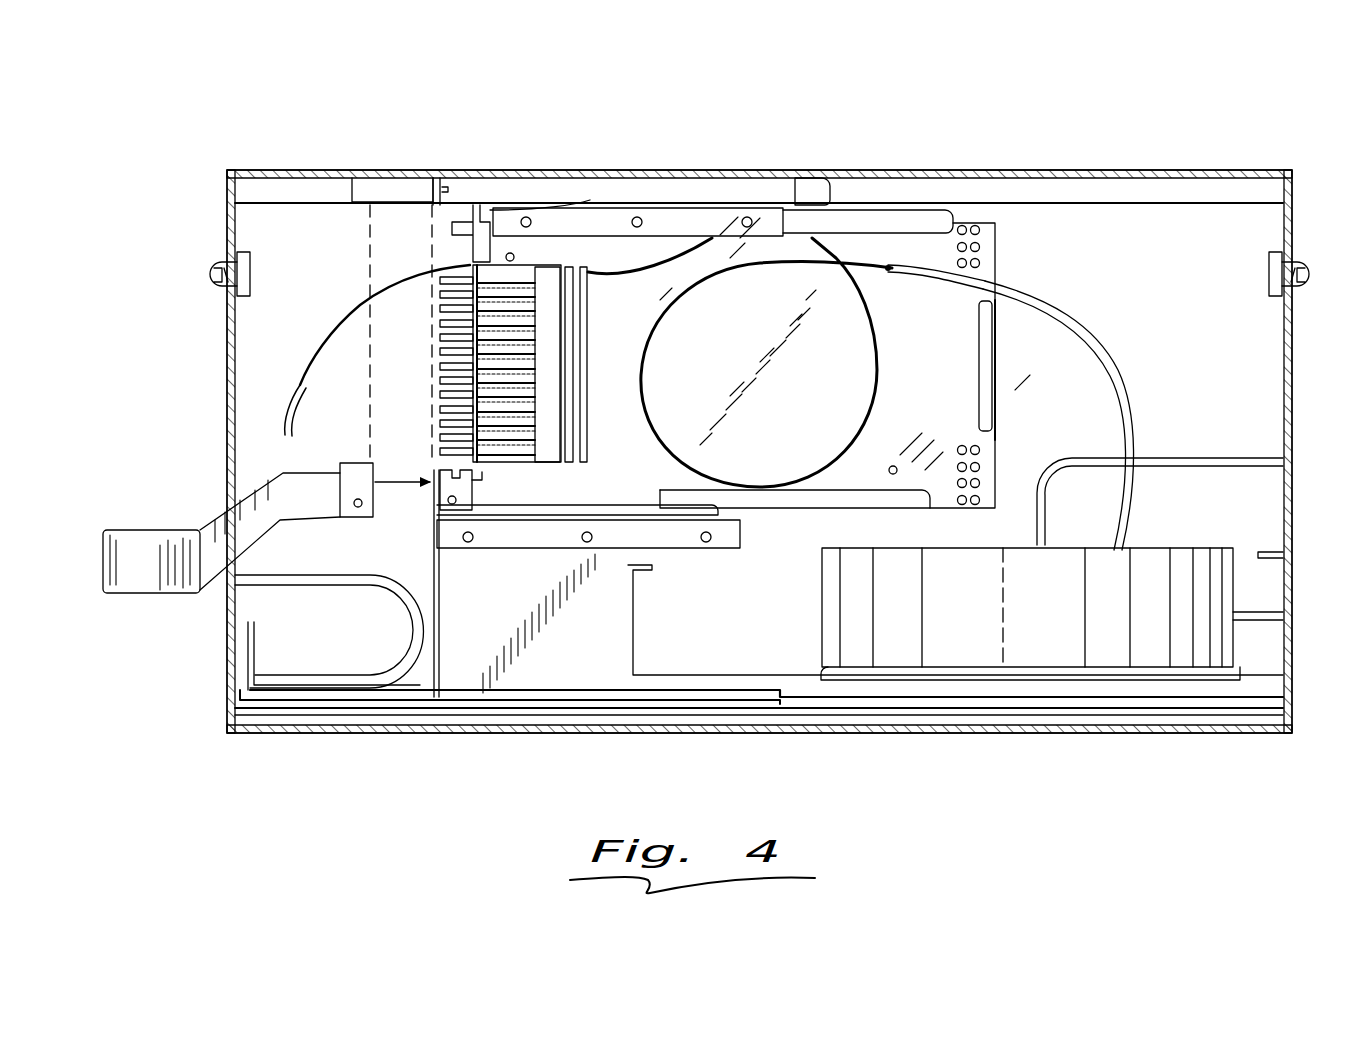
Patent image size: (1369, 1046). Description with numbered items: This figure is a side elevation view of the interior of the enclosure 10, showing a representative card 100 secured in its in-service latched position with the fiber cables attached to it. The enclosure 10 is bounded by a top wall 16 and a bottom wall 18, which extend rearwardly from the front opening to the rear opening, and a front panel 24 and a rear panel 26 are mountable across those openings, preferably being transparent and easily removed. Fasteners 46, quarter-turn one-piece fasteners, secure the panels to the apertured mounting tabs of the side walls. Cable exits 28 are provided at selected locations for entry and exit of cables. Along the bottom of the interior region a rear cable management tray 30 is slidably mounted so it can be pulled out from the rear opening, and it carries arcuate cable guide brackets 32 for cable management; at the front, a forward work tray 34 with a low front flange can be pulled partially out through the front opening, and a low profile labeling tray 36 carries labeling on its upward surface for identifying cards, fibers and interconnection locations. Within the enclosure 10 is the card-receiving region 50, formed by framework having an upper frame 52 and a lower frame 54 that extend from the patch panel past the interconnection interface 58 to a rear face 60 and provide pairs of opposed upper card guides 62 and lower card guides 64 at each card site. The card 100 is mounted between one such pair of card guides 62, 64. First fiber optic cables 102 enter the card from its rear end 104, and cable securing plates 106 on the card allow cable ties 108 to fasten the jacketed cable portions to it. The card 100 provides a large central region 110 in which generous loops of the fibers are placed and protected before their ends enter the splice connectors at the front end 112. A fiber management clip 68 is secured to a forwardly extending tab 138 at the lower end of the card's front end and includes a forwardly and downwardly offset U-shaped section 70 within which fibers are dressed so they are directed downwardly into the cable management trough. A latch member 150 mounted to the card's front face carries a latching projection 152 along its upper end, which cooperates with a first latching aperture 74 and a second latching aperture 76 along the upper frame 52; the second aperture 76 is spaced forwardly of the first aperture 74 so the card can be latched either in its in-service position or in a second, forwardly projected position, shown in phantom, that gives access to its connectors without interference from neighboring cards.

The enclosure 10 is at (322, 138).
The top wall 16 is at (975, 168).
The bottom wall 18 is at (1050, 733).
The front panel 24 is at (228, 362).
The rear panel 26 is at (1292, 413).
The cable exit 28 is at (327, 745).
The rear cable management tray 30 is at (1263, 552).
The arcuate cable guide bracket 32 is at (1120, 583).
The forward work tray 34 is at (250, 642).
The labeling tray 36 is at (240, 712).
The fastener 46 is at (210, 265).
The card-receiving region 50 is at (438, 455).
The upper frame 52 is at (352, 185).
The lower frame 54 is at (432, 550).
The interconnection interface 58 is at (455, 245).
The rear face 60 is at (800, 192).
The upper card guide 62 is at (615, 207).
The lower card guide 64 is at (623, 513).
The fiber management clip 68 is at (195, 592).
The U-shaped section 70 is at (150, 556).
The first latching aperture 74 is at (483, 202).
The second latching aperture 76 is at (370, 207).
The card 100 is at (1003, 238).
The first fiber optic cable 102 is at (1098, 355).
The rear end 104 is at (998, 378).
The cable securing plate 106 is at (963, 300).
The cable tie 108 is at (960, 283).
The central region 110 is at (770, 382).
The front end 112 is at (475, 478).
The forwardly extending tab 138 is at (433, 493).
The latch member 150 is at (433, 265).
The latching projection 152 is at (487, 207).